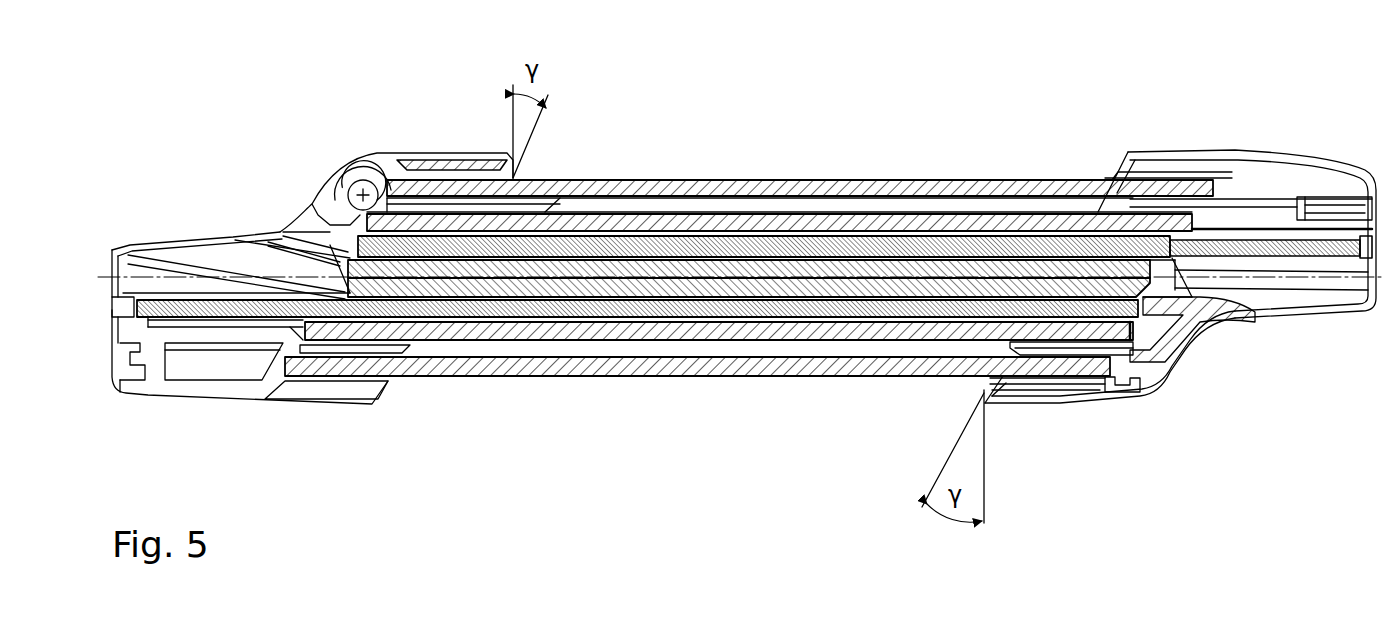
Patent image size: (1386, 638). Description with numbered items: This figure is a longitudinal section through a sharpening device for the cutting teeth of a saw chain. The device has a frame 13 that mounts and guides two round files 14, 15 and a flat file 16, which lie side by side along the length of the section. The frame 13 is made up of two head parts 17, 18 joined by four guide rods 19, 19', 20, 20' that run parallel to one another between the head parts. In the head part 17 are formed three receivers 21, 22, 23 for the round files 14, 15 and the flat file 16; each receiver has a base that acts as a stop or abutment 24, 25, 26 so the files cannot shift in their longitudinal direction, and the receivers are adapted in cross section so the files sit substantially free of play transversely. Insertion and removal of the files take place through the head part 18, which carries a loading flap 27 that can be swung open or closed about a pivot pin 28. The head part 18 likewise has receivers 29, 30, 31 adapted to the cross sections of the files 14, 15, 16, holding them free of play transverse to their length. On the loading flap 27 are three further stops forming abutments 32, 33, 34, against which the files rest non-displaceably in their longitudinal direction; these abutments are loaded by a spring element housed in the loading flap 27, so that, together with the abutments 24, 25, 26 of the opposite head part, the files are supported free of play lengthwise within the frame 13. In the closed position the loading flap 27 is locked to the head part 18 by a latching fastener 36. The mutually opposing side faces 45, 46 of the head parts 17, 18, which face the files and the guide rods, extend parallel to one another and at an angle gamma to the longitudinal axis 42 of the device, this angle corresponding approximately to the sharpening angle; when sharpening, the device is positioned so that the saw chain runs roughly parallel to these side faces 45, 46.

The frame 13 is at (792, 156).
The round file 14 is at (668, 312).
The round file 15 is at (865, 245).
The flat file 16 is at (813, 290).
The head part 17 is at (1294, 324).
The head part 18 is at (278, 408).
The guide rod 19 is at (719, 413).
The guide rod 19' is at (800, 125).
The guide rod 20 is at (779, 142).
The guide rod 20' is at (697, 431).
The receiver 21 is at (1075, 347).
The receiver 22 is at (1268, 240).
The receiver 23 is at (1127, 386).
The abutment 24 is at (1140, 300).
The abutment 25 is at (1357, 235).
The abutment 26 is at (1172, 258).
The loading flap 27 is at (208, 247).
The pivot pin 28 is at (363, 180).
The receiver 29 is at (216, 320).
The receiver 30 is at (433, 160).
The receiver 31 is at (378, 342).
The abutment 32 is at (118, 383).
The abutment 33 is at (284, 236).
The abutment 34 is at (268, 242).
The latching fastener 36 is at (146, 390).
The longitudinal axis 42 is at (955, 277).
The side face 45 is at (1088, 205).
The side face 46 is at (477, 207).